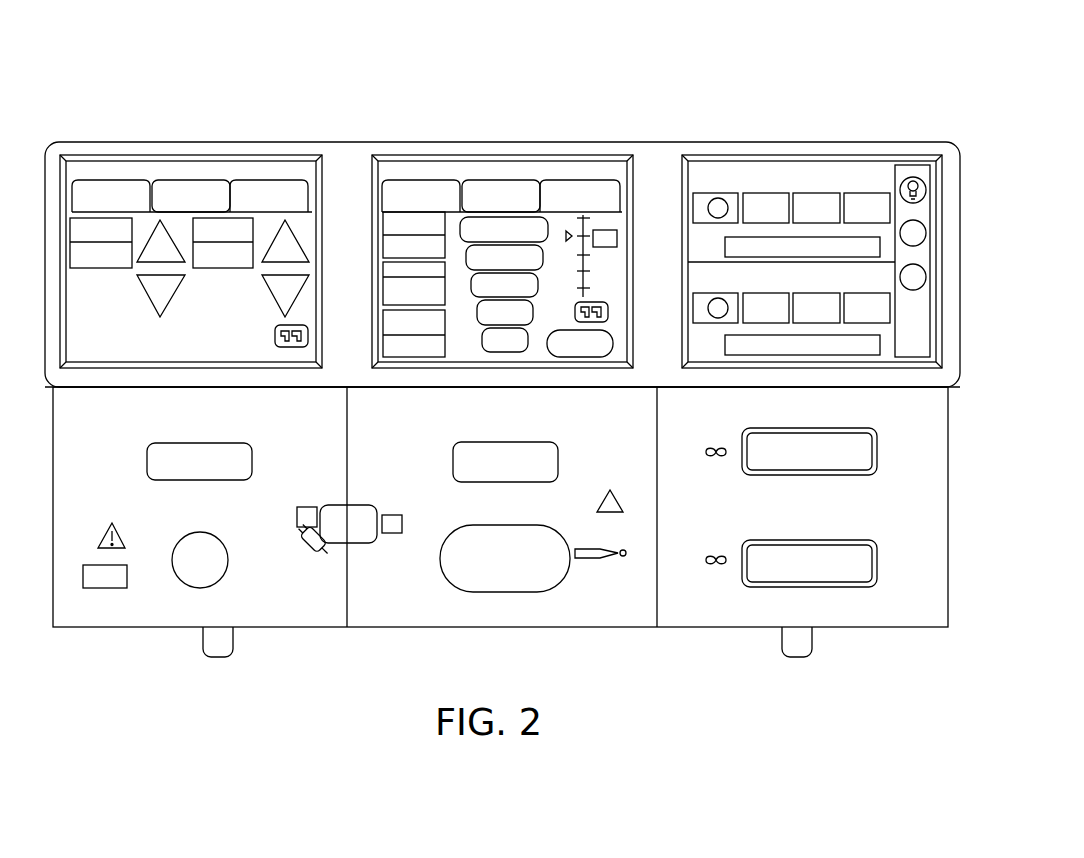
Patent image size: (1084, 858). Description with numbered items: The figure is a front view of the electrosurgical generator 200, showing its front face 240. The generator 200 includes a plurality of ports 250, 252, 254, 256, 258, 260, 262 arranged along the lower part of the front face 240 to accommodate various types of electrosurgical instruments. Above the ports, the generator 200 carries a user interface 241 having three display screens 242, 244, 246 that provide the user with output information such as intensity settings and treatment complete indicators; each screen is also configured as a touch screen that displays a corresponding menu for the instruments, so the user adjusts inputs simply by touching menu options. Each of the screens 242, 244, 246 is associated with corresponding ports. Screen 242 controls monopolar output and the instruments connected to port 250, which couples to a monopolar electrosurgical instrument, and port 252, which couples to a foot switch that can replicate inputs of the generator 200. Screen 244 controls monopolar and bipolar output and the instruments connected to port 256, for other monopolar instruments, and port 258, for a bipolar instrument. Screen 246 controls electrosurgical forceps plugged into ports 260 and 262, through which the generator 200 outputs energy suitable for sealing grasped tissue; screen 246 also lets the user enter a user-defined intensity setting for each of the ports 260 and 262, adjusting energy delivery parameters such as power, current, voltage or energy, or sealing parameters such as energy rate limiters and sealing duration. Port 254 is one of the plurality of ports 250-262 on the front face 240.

The generator 200 is at (842, 106).
The front face 240 is at (365, 142).
The user interface 241 is at (522, 118).
The display screen 242 is at (322, 167).
The display screen 244 is at (630, 212).
The display screen 246 is at (681, 345).
The port 250 is at (208, 442).
The port 252 is at (228, 557).
The port 254 is at (340, 505).
The port 256 is at (528, 442).
The port 258 is at (563, 577).
The port 260 is at (877, 449).
The port 262 is at (877, 561).